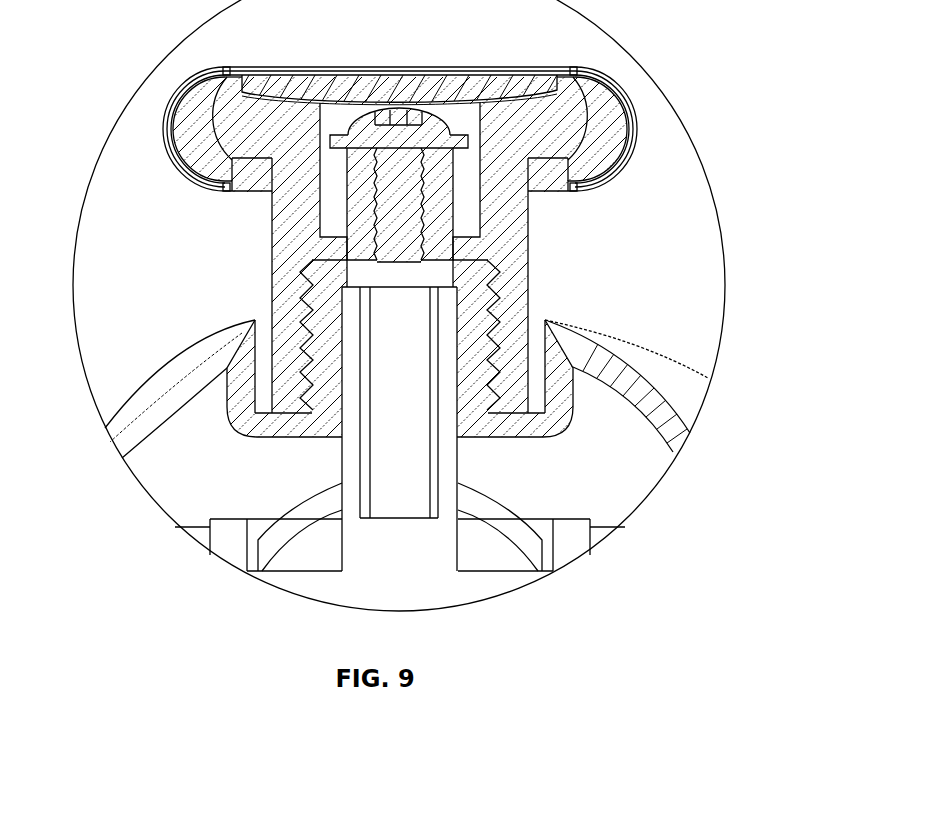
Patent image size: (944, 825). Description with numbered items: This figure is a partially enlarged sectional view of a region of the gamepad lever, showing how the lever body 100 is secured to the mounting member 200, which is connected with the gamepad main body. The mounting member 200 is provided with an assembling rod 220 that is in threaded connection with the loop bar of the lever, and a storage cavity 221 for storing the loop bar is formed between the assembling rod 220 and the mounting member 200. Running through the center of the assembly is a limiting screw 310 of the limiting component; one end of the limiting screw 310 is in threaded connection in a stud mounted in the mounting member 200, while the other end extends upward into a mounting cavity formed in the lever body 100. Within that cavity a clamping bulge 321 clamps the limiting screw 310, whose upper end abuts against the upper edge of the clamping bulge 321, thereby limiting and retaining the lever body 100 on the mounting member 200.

The lever body 100 is at (273, 125).
The mounting member 200 is at (197, 372).
The assembling rod 220 is at (325, 293).
The storage cavity 221 is at (537, 367).
The limiting screw 310 is at (400, 138).
The clamping bulge 321 is at (465, 249).